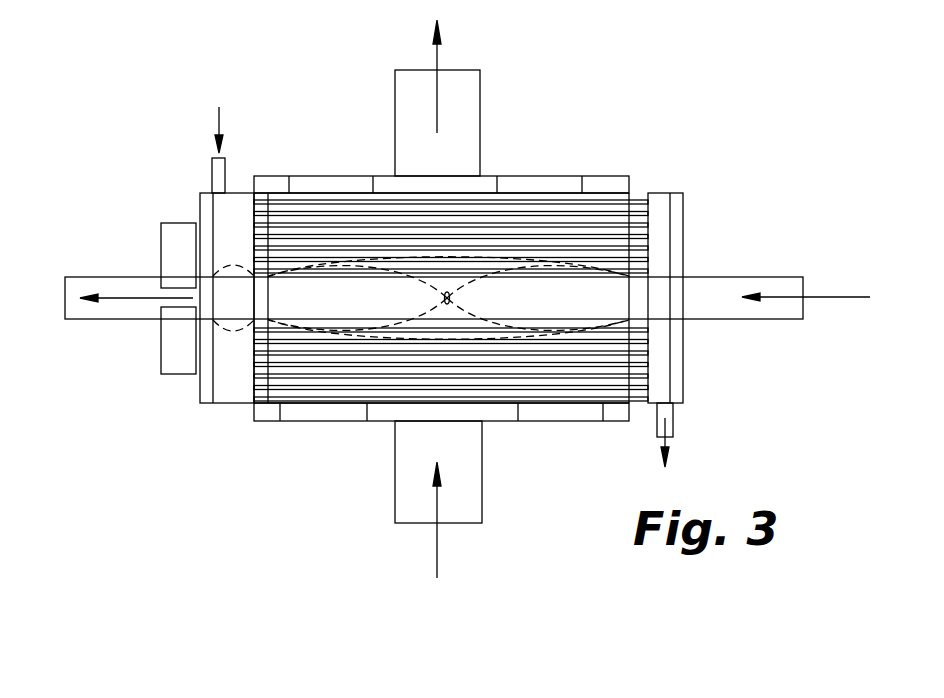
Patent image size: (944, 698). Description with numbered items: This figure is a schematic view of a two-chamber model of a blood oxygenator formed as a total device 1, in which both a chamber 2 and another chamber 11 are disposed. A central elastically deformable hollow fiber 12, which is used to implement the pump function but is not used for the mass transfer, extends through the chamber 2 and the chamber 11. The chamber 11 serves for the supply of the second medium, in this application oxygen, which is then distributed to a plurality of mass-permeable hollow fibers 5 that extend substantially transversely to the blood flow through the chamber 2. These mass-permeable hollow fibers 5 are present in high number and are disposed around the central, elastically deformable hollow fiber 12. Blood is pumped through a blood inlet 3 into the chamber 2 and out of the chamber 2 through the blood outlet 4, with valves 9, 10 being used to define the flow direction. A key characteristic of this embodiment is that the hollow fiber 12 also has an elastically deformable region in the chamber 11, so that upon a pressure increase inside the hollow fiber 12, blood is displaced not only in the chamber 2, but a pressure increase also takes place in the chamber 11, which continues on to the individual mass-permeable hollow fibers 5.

The total device 1 is at (693, 185).
The chamber 2 is at (613, 175).
The blood inlet 3 is at (482, 473).
The blood outlet 4 is at (481, 123).
The mass-permeable hollow fibers 5 is at (637, 332).
The valve 9 is at (328, 415).
The valve 10 is at (337, 184).
The chamber 11 is at (232, 387).
The elastically deformable hollow fiber 12 is at (82, 313).